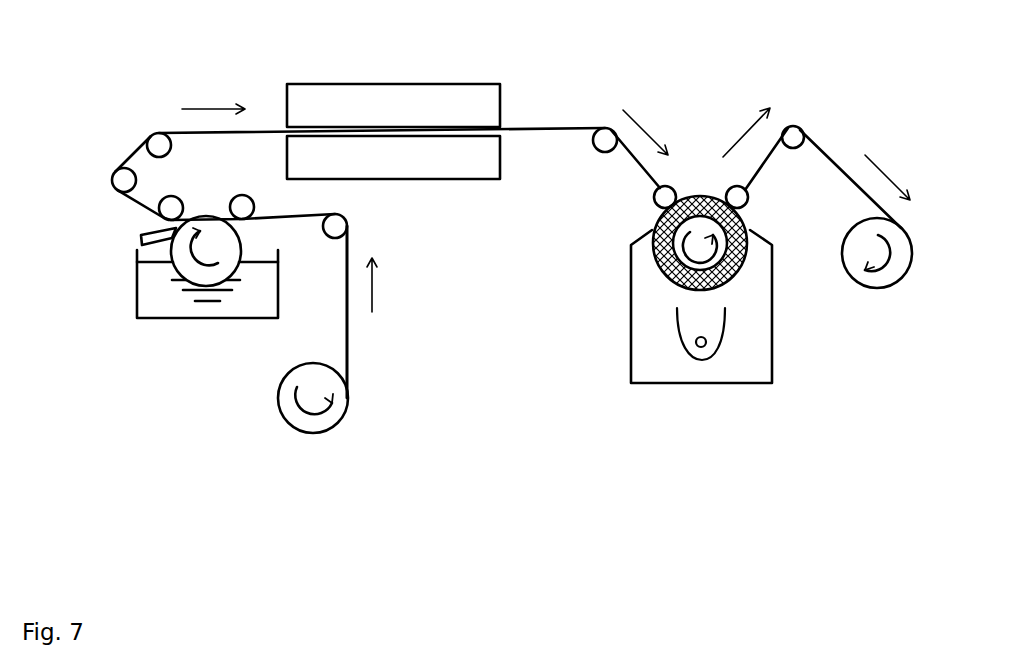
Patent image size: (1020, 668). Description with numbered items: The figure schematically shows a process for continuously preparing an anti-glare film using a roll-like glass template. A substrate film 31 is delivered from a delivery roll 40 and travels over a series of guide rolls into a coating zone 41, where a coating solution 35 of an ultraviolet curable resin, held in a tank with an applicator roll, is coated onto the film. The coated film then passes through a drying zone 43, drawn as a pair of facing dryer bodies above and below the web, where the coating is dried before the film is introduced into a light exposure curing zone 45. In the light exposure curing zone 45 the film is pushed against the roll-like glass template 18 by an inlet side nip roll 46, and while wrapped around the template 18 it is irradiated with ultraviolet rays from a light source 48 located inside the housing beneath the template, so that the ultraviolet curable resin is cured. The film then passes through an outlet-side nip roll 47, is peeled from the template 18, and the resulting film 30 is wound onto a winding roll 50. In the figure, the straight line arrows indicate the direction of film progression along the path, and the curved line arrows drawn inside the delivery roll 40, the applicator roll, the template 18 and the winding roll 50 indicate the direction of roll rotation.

The roll-like glass template 18 is at (657, 223).
The coated film 30 is at (838, 158).
The substrate film 31 is at (350, 343).
The coating solution 35 is at (278, 340).
The delivery roll 40 is at (315, 423).
The coating zone 41 is at (164, 309).
The drying zone 43 is at (500, 67).
The light exposure curing zone 45 is at (656, 332).
The inlet side nip roll 46 is at (653, 188).
The outlet-side nip roll 47 is at (750, 194).
The light source 48 is at (642, 344).
The winding roll 50 is at (892, 277).